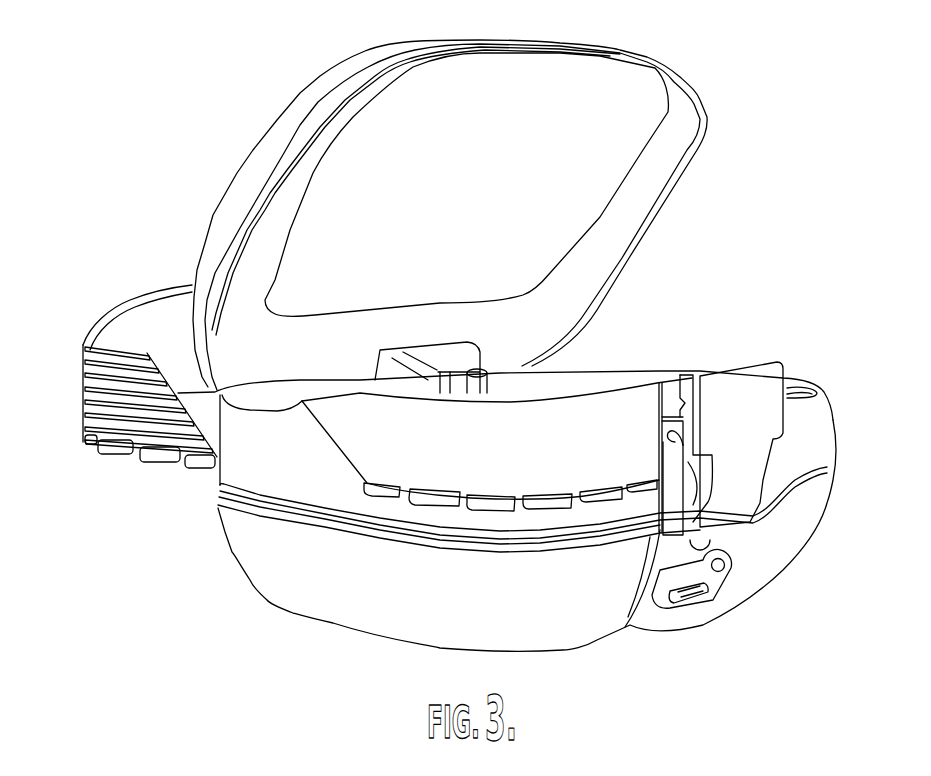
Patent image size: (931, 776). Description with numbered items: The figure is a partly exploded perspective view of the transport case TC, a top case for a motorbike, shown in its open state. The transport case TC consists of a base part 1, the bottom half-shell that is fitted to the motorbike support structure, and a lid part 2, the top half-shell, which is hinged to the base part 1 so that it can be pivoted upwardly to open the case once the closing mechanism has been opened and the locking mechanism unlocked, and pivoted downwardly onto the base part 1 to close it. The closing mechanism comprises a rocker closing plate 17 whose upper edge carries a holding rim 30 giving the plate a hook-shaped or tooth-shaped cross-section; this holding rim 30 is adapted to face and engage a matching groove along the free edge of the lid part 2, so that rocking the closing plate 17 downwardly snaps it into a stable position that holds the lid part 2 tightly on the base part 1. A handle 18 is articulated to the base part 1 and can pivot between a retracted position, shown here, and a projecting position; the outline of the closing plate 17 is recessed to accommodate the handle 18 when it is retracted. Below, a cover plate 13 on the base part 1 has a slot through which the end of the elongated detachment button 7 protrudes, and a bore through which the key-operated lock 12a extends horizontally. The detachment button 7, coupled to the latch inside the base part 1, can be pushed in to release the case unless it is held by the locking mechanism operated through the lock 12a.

The transport case TC is at (748, 90).
The base part 1 is at (820, 412).
The lid part 2 is at (287, 127).
The detachment button 7 is at (693, 598).
The lock 12a is at (723, 567).
The cover plate 13 is at (660, 595).
The rocker closing plate 17 is at (753, 465).
The handle 18 is at (643, 532).
The holding rim 30 is at (677, 392).